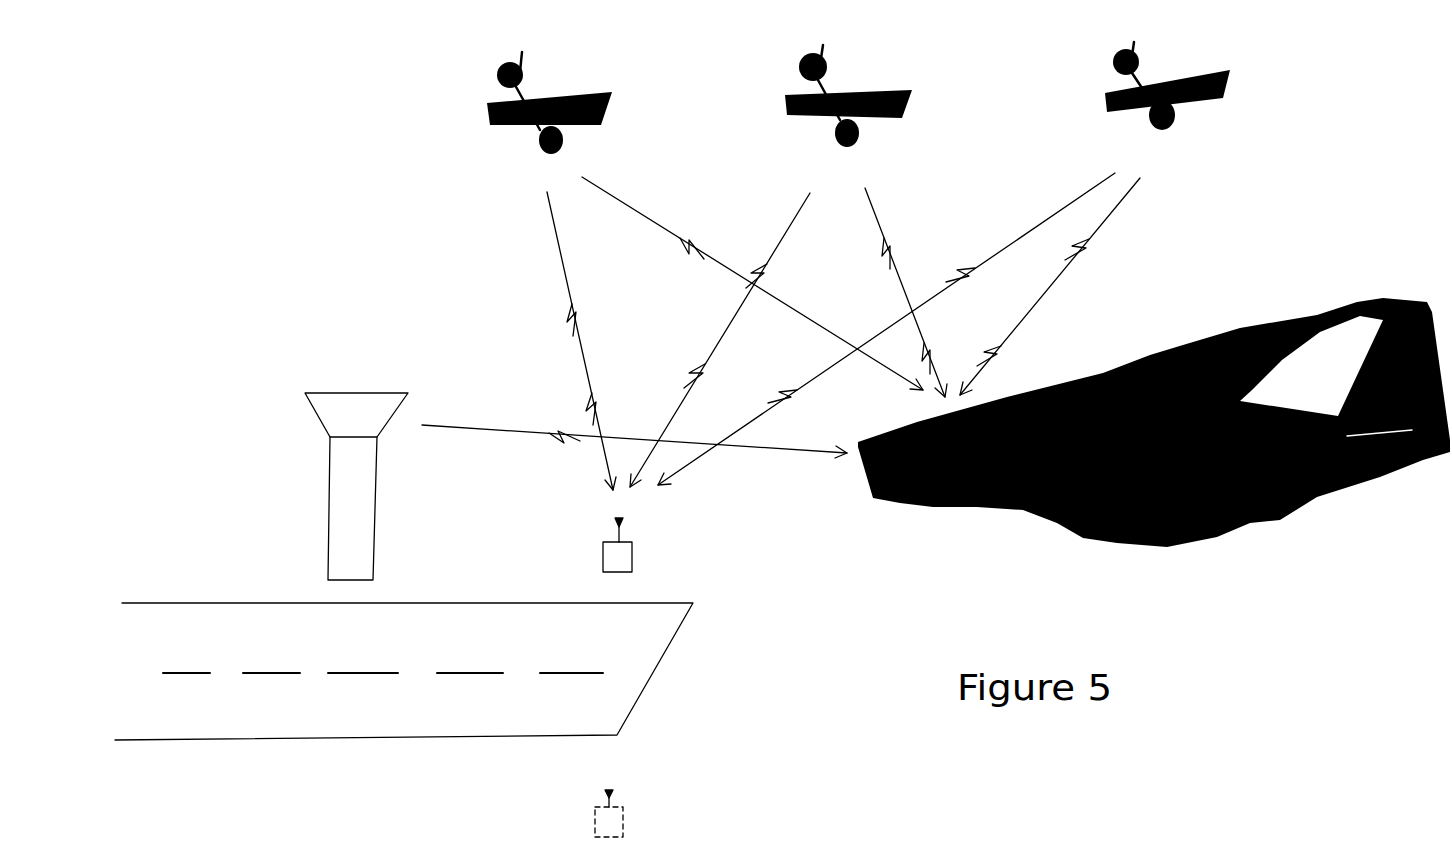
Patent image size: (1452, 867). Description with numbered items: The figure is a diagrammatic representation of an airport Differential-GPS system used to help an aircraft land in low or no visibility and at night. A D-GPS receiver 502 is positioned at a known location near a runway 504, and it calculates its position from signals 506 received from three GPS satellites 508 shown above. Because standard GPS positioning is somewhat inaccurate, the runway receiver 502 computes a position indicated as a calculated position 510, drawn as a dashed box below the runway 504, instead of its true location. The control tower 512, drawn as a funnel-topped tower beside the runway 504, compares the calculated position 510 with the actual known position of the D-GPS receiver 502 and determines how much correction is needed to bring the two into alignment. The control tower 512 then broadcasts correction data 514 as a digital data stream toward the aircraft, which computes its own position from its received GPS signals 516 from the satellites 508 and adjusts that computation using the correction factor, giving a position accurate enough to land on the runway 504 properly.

The D-GPS receiver 502 is at (632, 552).
The runway 504 is at (347, 738).
The signals 506 is at (558, 250).
The GPS satellites 508 is at (492, 127).
The calculated position 510 is at (623, 818).
The control tower 512 is at (333, 457).
The correction data 514 is at (483, 432).
The received GPS signals 516 is at (633, 213).